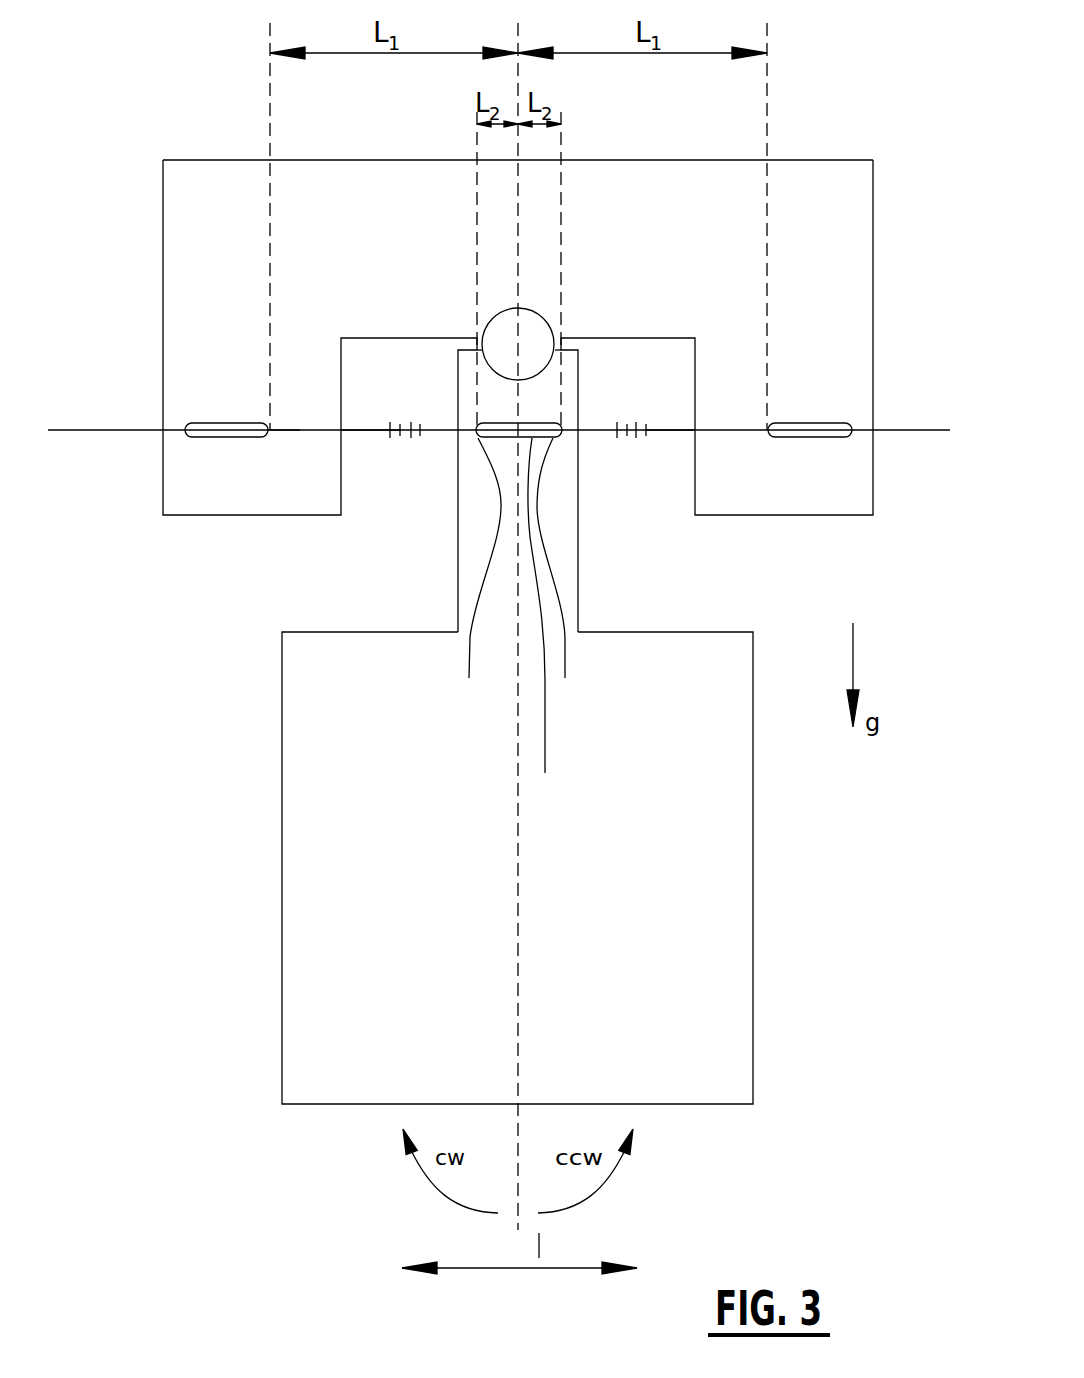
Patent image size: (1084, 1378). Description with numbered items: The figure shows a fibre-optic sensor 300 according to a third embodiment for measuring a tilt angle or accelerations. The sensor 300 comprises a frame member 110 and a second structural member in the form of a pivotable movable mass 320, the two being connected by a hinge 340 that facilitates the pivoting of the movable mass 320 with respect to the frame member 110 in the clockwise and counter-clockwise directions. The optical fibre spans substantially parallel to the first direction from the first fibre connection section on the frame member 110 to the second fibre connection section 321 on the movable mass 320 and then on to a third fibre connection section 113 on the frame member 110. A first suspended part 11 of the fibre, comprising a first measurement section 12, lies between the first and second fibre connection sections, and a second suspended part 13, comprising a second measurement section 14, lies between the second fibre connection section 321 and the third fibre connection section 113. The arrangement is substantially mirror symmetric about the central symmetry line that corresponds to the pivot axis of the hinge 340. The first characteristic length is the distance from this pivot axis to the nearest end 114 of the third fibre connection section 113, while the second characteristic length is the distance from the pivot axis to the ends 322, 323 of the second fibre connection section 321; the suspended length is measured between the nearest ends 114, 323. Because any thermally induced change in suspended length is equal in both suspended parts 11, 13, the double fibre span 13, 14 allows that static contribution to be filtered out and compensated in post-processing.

The fibre-optic sensor 300 is at (128, 150).
The frame member 110 is at (197, 268).
The hinge 340 is at (502, 333).
The third fibre connection section 113 is at (213, 433).
The nearest end of the third fibre connection section 114 is at (268, 432).
The second suspended part 13 is at (368, 428).
The second measurement section 14 is at (408, 437).
The first suspended part 11 is at (668, 428).
The first measurement section 12 is at (633, 437).
The movable mass 320 is at (328, 927).
The second fibre connection section 321 is at (551, 625).
The end of the second fibre connection section 322 is at (572, 579).
The end of the second fibre connection section 323 is at (473, 579).